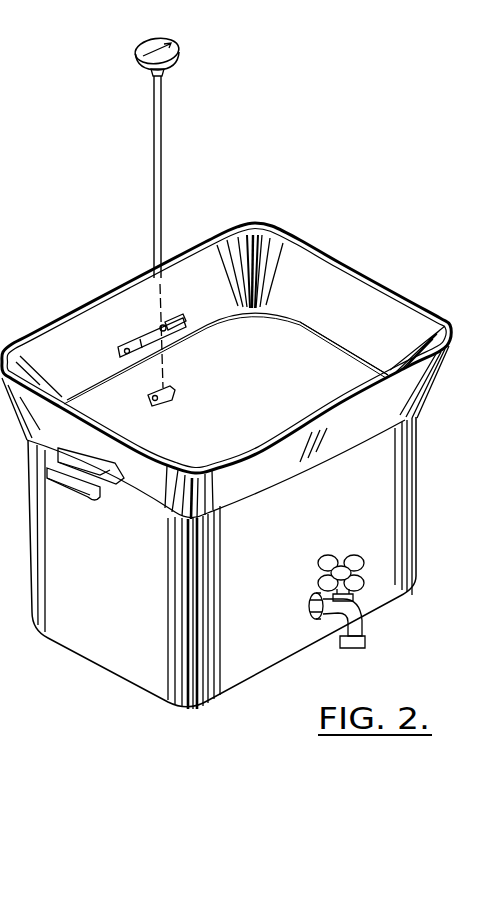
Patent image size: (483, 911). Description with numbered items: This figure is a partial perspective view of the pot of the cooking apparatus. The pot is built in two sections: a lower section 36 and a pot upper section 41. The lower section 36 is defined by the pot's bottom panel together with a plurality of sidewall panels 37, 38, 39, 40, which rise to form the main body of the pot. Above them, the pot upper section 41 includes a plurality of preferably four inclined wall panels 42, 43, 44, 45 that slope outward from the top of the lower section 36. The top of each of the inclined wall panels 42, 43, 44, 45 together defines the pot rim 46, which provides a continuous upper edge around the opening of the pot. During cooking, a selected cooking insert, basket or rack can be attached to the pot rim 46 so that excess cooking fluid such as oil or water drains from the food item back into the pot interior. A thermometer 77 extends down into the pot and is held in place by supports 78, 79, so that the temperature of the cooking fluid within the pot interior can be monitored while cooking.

The lower section 36 is at (388, 545).
The sidewall panel 37 is at (278, 637).
The sidewall panel 38 is at (112, 650).
The sidewall panel 39 is at (100, 400).
The sidewall panel 40 is at (313, 350).
The pot upper section 41 is at (447, 320).
The inclined wall panel 42 is at (332, 437).
The inclined wall panel 43 is at (150, 490).
The inclined wall panel 44 is at (125, 302).
The inclined wall panel 45 is at (300, 262).
The pot rim 46 is at (410, 300).
The thermometer 77 is at (165, 157).
The support 78 is at (172, 318).
The support 79 is at (170, 401).